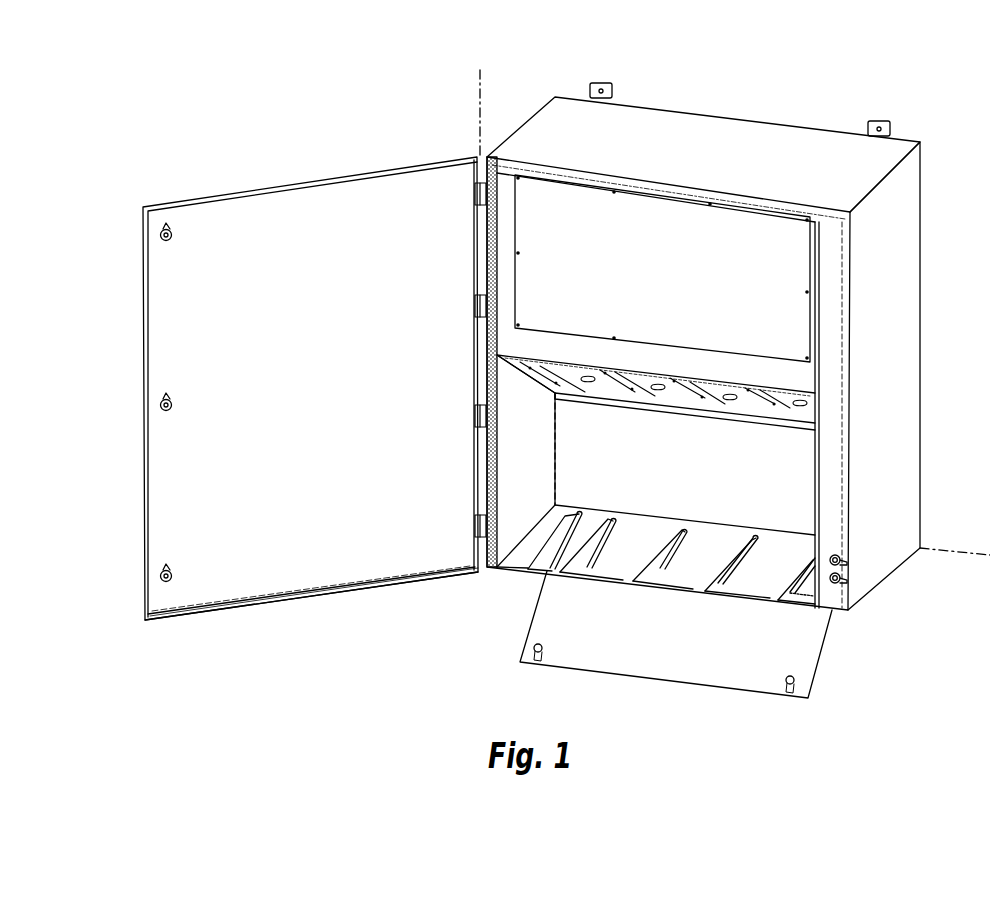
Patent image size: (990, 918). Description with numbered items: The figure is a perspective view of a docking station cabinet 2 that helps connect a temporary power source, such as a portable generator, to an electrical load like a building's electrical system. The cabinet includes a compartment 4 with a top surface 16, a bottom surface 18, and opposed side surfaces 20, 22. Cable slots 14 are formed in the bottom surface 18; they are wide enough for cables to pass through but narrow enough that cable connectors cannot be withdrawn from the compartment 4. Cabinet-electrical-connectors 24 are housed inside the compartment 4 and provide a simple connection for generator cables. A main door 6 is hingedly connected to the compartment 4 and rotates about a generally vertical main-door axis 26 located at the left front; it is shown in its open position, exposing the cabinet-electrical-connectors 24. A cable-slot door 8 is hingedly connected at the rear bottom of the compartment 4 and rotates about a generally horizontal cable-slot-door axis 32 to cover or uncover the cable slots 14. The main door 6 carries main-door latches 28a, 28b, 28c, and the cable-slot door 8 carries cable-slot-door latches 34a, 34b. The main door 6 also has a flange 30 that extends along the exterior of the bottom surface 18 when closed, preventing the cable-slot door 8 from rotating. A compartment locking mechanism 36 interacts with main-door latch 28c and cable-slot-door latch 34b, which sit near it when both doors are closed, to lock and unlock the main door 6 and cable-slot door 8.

The docking station cabinet 2 is at (518, 382).
The compartment 4 is at (715, 382).
The main door 6 is at (266, 403).
The cable-slot door 8 is at (636, 651).
The cable slots 14 is at (548, 536).
The top surface 16 is at (709, 161).
The bottom surface 18 is at (656, 542).
The side surface 20 is at (530, 451).
The side surface 22 is at (897, 442).
The cabinet-electrical-connectors 24 is at (590, 385).
The main-door axis 26 is at (487, 70).
The main-door latch 28a is at (162, 231).
The main-door latch 28b is at (162, 401).
The main-door latch 28c is at (162, 572).
The flange 30 is at (289, 600).
The cable-slot-door axis 32 is at (984, 552).
The cable-slot-door latch 34a is at (534, 648).
The cable-slot-door latch 34b is at (787, 684).
The compartment locking mechanism 36 is at (856, 578).